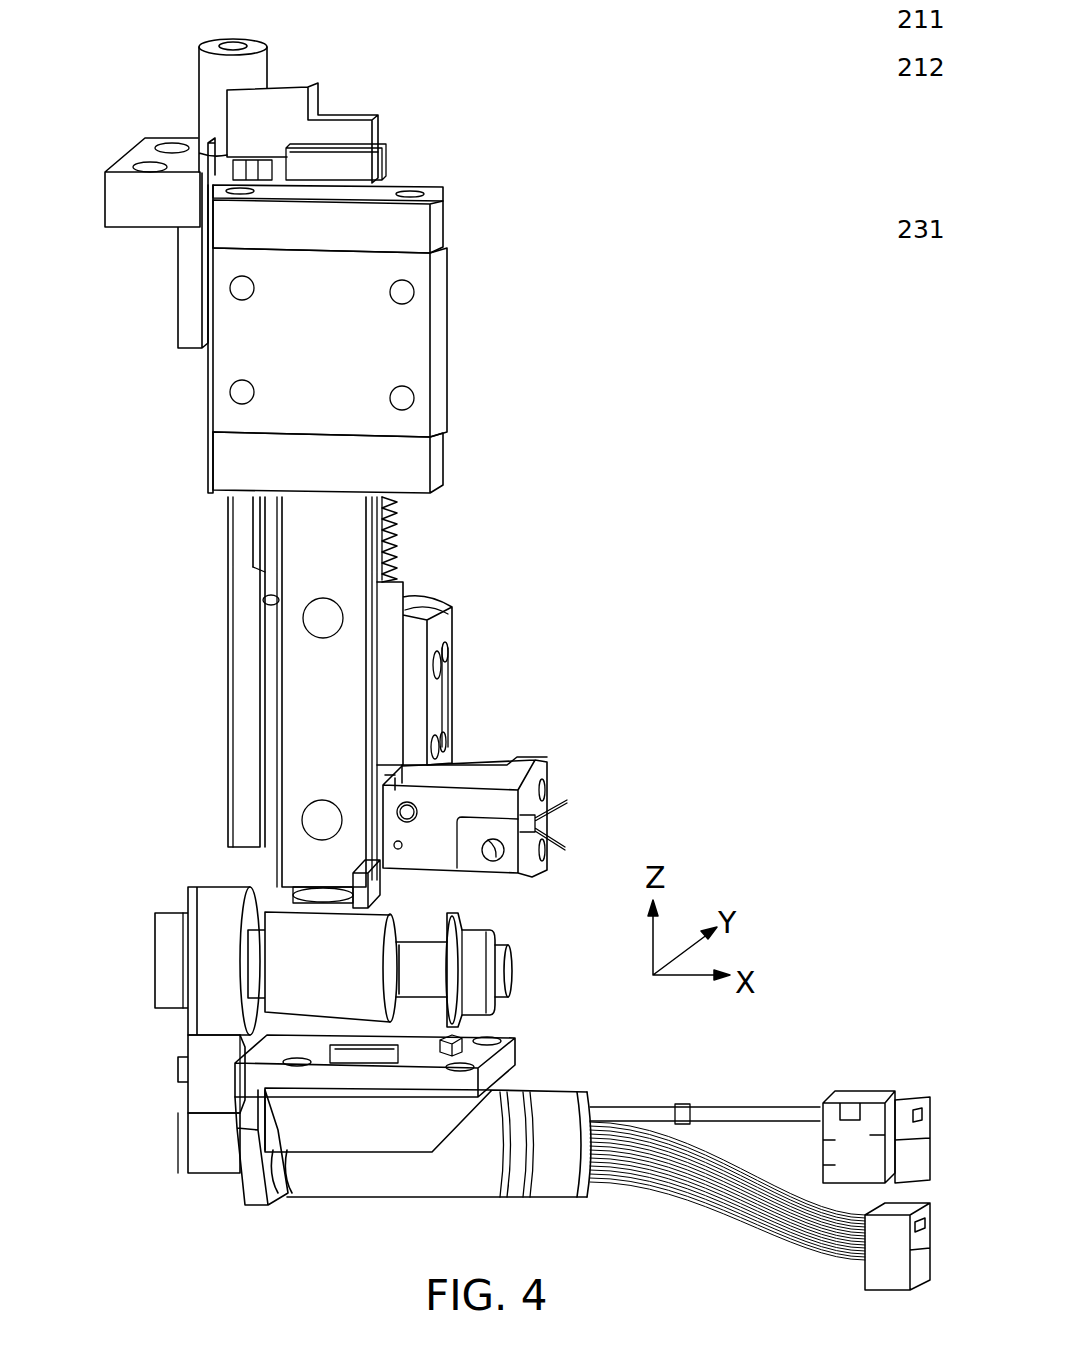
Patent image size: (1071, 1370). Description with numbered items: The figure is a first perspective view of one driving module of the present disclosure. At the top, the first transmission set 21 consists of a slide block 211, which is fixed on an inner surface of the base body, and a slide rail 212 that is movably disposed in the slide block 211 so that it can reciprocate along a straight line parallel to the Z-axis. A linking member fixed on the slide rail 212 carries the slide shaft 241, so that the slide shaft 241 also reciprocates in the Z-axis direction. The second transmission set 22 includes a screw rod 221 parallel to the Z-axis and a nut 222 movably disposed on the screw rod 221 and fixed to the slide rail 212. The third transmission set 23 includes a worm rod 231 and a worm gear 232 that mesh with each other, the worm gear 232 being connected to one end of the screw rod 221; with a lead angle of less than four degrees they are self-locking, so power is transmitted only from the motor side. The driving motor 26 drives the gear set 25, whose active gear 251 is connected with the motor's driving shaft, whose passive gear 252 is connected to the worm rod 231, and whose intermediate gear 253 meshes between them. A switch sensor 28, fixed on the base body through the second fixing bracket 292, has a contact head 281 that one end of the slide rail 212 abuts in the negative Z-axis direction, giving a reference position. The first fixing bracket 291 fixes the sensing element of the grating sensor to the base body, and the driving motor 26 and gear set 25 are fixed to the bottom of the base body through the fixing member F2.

The first transmission set 21 is at (893, 6).
The slide block 211 is at (405, 343).
The slide rail 212 is at (297, 707).
The second transmission set 22 is at (893, 110).
The screw rod 221 is at (921, 124).
The nut 222 is at (921, 172).
The third transmission set 23 is at (893, 216).
The worm rod 231 is at (397, 922).
The worm gear 232 is at (921, 277).
The slide shaft 241 is at (260, 65).
The gear set 25 is at (78, 958).
The active gear 251 is at (205, 1142).
The passive gear 252 is at (205, 978).
The intermediate gear 253 is at (205, 1045).
The driving motor 26 is at (400, 1173).
The switch sensor 28 is at (458, 803).
The contact head 281 is at (355, 878).
The first fixing bracket 291 is at (120, 200).
The second fixing bracket 292 is at (528, 770).
The fixing member F2 is at (253, 1185).